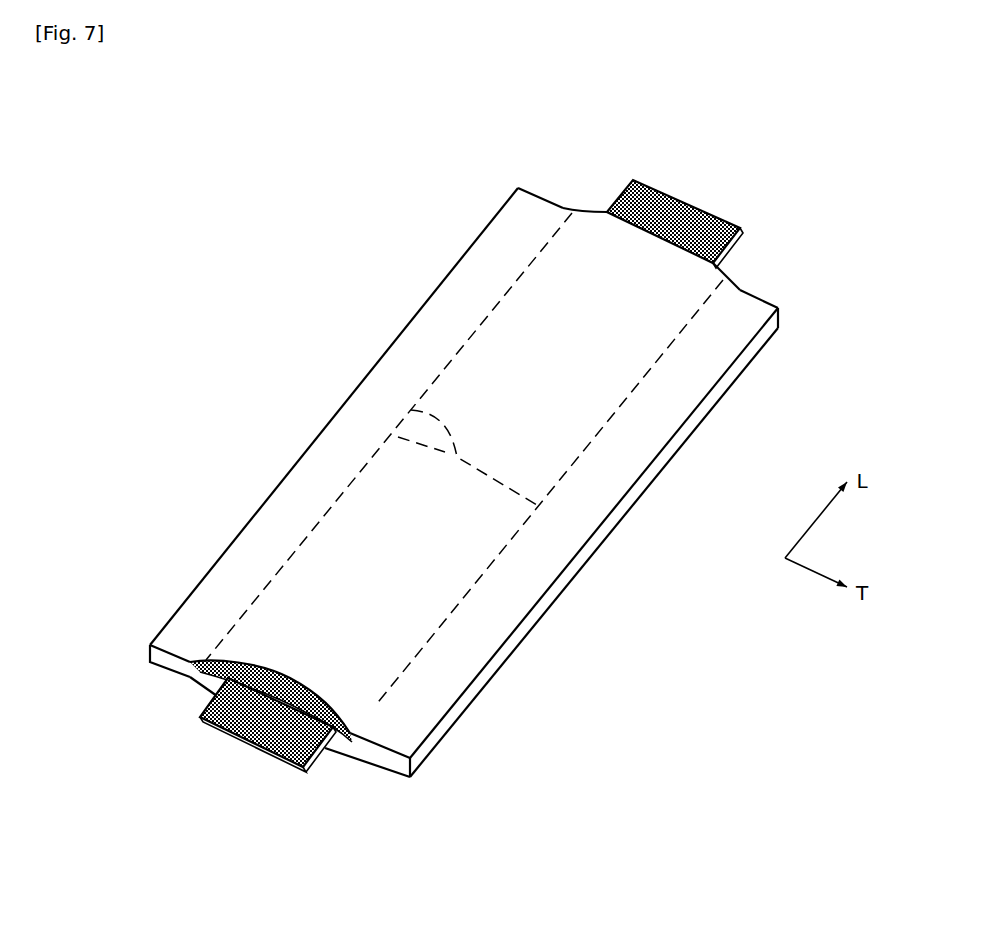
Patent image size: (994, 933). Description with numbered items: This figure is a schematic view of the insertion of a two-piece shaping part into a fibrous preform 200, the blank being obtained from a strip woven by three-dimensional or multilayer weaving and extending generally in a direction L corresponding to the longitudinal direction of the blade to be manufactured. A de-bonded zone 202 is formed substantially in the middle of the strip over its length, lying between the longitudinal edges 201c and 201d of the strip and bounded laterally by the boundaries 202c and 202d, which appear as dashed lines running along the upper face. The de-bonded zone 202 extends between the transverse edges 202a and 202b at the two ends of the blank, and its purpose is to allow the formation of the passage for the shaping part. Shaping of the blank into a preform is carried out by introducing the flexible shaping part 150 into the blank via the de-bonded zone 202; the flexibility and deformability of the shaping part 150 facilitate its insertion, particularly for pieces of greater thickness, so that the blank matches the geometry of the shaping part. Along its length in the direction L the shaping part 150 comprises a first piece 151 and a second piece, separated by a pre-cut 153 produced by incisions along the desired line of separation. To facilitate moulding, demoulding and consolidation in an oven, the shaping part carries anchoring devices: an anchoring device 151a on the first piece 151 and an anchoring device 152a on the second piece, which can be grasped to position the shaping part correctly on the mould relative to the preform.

The shaping part 150 is at (638, 178).
The first piece 151 is at (360, 738).
The anchoring device 151a is at (320, 766).
The anchoring device 152a is at (712, 228).
The pre-cut 153 is at (411, 410).
The fibrous preform 200 is at (742, 376).
The longitudinal edge 201c is at (250, 510).
The longitudinal edge 201d is at (540, 613).
The de-bonded zone 202 is at (348, 720).
The transverse edge 202a is at (178, 660).
The transverse edge 202b is at (767, 300).
The boundary 202c is at (490, 313).
The boundary 202d is at (592, 444).